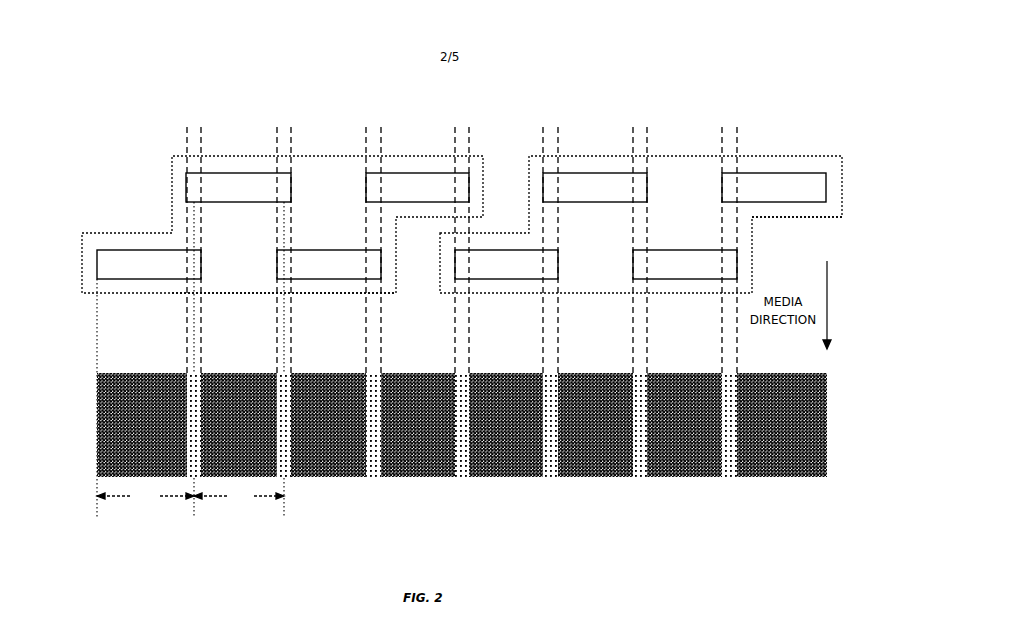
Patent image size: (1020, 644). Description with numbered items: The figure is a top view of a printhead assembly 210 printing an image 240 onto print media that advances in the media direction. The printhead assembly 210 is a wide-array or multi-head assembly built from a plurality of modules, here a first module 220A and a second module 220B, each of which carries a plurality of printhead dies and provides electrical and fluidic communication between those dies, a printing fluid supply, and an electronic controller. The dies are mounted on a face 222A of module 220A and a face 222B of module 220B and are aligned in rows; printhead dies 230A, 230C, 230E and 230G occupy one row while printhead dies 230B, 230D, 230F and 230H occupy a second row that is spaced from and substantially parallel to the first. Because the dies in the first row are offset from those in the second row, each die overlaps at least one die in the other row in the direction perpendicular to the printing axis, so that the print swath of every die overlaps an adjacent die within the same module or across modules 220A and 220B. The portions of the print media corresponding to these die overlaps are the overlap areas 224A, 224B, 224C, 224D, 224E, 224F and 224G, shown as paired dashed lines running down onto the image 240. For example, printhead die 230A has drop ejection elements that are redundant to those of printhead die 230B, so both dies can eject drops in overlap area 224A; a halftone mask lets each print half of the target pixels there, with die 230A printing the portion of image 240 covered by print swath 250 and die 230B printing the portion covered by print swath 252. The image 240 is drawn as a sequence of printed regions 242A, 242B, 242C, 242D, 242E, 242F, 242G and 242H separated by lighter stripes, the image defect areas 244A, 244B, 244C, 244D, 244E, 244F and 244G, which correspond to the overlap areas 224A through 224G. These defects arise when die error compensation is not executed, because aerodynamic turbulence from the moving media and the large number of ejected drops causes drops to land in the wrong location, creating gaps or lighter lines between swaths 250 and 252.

The printhead assembly 210 is at (146, 117).
The module 220A is at (316, 155).
The module 220B is at (817, 155).
The face of module 222A is at (228, 285).
The face of module 222B is at (792, 212).
The overlap area 224A is at (192, 130).
The overlap area 224B is at (282, 130).
The overlap area 224C is at (370, 130).
The overlap area 224D is at (460, 130).
The overlap area 224E is at (550, 132).
The overlap area 224F is at (638, 130).
The overlap area 224G is at (727, 130).
The printhead die 230A is at (97, 264).
The printhead die 230B is at (186, 188).
The printhead die 230C is at (277, 264).
The printhead die 230D is at (366, 188).
The printhead die 230E is at (455, 264).
The printhead die 230F is at (543, 190).
The printhead die 230G is at (633, 264).
The printhead die 230H is at (722, 190).
The image 240 is at (97, 430).
The printed swath region 242A is at (142, 425).
The printed swath region 242B is at (239, 425).
The printed swath region 242C is at (328, 425).
The printed swath region 242D is at (418, 425).
The printed swath region 242E is at (506, 425).
The printed swath region 242F is at (595, 425).
The printed swath region 242G is at (684, 425).
The printed swath region 242H is at (782, 425).
The image defect area 244A is at (200, 384).
The image defect area 244B is at (292, 384).
The image defect area 244C is at (373, 478).
The image defect area 244D is at (462, 478).
The image defect area 244E is at (550, 478).
The image defect area 244F is at (640, 478).
The image defect area 244G is at (730, 478).
The print swath 250 is at (145, 496).
The print swath 252 is at (239, 496).